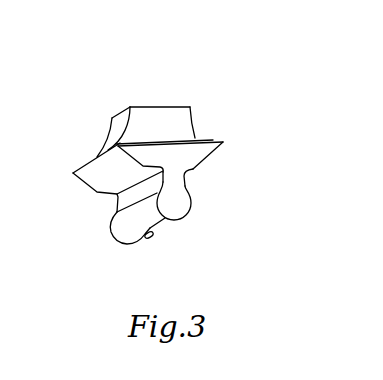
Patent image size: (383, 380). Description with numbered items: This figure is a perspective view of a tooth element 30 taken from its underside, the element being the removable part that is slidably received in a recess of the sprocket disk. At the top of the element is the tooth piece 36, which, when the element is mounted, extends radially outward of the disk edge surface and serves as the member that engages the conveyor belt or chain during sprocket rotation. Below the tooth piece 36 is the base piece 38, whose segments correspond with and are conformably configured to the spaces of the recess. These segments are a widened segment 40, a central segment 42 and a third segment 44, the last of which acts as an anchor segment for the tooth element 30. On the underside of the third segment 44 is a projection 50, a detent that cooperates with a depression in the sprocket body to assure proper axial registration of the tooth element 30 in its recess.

The tooth element 30 is at (198, 88).
The tooth piece 36 is at (163, 112).
The base piece 38 is at (213, 142).
The widened segment 40 is at (197, 158).
The central segment 42 is at (173, 175).
The third segment 44 is at (175, 202).
The projection 50 is at (154, 237).